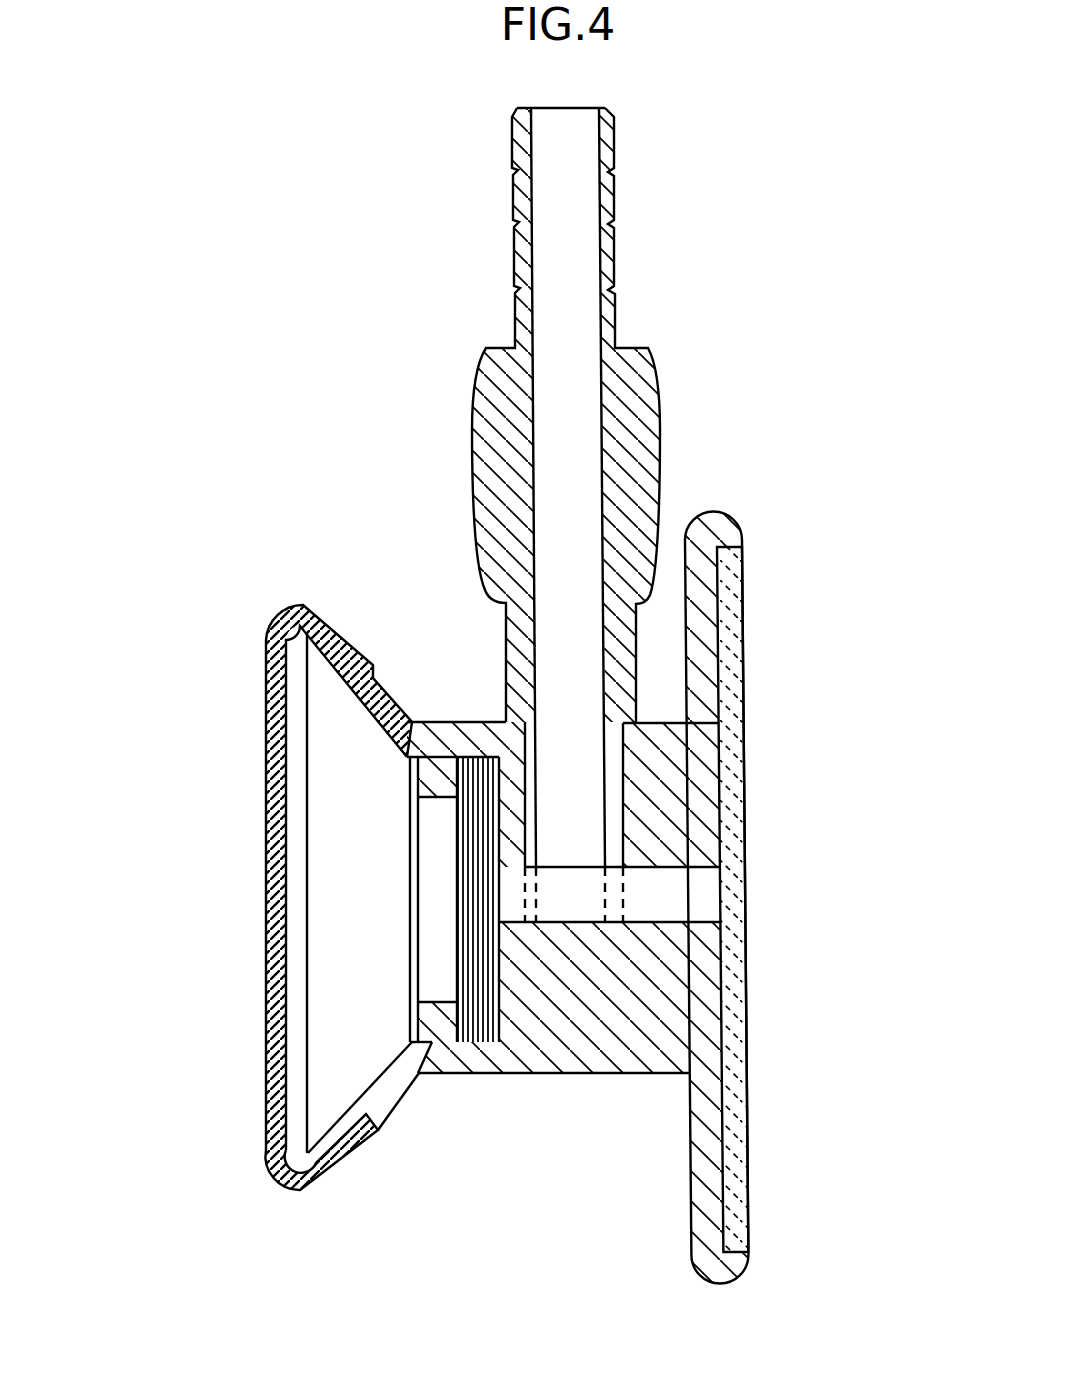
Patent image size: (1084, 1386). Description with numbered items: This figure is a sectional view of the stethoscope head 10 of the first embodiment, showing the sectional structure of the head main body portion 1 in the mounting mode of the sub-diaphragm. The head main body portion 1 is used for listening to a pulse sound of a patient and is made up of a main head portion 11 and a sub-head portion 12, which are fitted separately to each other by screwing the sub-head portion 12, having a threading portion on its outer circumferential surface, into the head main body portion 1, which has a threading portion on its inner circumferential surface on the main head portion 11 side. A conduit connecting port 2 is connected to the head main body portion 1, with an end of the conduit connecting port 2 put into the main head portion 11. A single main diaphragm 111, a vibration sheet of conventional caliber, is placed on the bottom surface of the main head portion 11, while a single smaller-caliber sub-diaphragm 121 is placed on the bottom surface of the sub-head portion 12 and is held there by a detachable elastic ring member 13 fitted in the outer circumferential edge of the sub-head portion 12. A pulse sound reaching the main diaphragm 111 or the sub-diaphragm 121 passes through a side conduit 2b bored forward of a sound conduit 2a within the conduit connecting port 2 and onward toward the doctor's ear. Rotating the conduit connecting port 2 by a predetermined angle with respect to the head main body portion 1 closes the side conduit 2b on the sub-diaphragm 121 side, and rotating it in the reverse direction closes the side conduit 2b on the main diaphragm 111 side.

The stethoscope head 10 is at (215, 537).
The head main body portion 1 is at (430, 640).
The conduit connecting port 2 is at (607, 195).
The sound conduit 2a is at (560, 715).
The side conduit 2b is at (657, 899).
The main head portion 11 is at (705, 1197).
The main diaphragm 111 is at (742, 748).
The sub-head portion 12 is at (387, 1087).
The sub-diaphragm 121 is at (298, 964).
The detachable elastic ring member 13 is at (275, 1170).